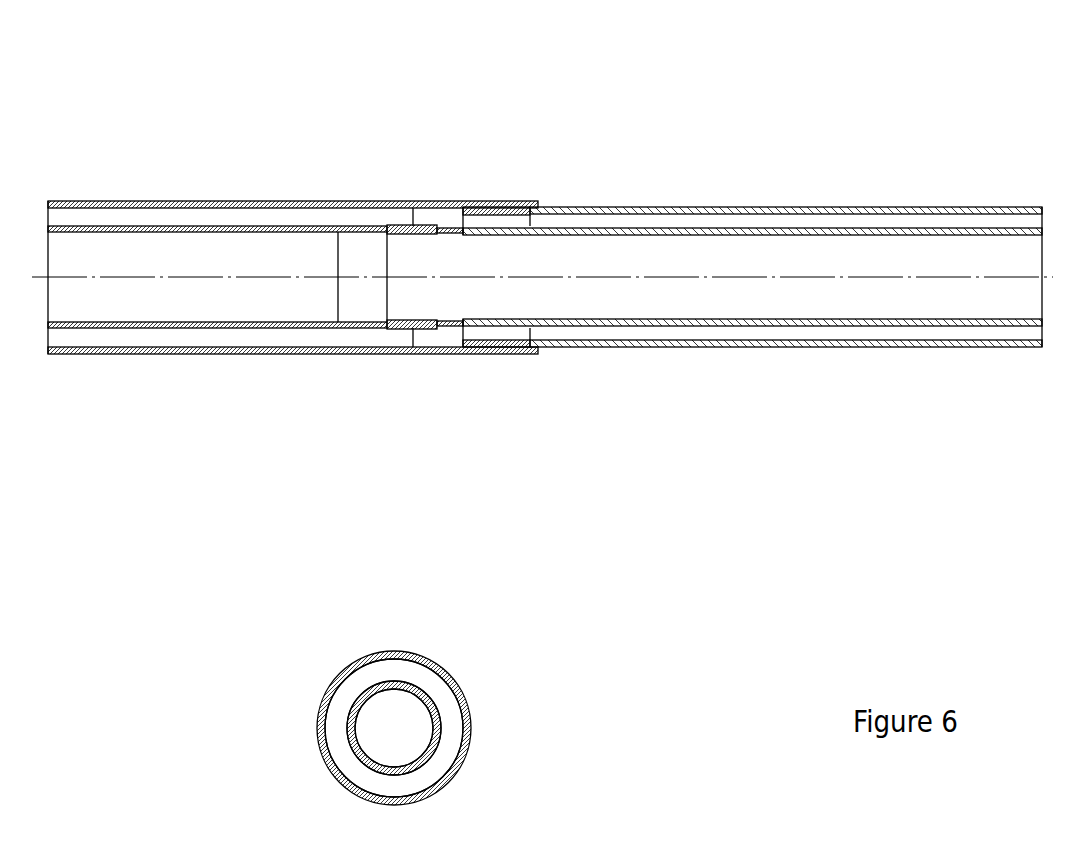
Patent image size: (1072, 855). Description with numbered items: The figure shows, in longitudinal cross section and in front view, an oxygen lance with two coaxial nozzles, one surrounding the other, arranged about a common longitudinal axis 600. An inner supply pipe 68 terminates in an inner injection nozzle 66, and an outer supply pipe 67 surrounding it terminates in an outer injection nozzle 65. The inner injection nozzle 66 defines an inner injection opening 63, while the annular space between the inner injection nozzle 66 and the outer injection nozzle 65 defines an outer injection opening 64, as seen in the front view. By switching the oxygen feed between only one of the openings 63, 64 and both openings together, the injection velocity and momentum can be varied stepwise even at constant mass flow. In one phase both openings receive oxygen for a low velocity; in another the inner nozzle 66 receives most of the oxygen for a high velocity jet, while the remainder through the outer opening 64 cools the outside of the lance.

The longitudinal axis 600 is at (680, 277).
The inner injection opening 63 is at (379, 722).
The outer injection opening 64 is at (445, 748).
The outer injection nozzle 65 is at (425, 355).
The inner injection nozzle 66 is at (303, 320).
The outer supply pipe 67 is at (977, 207).
The inner supply pipe 68 is at (784, 230).